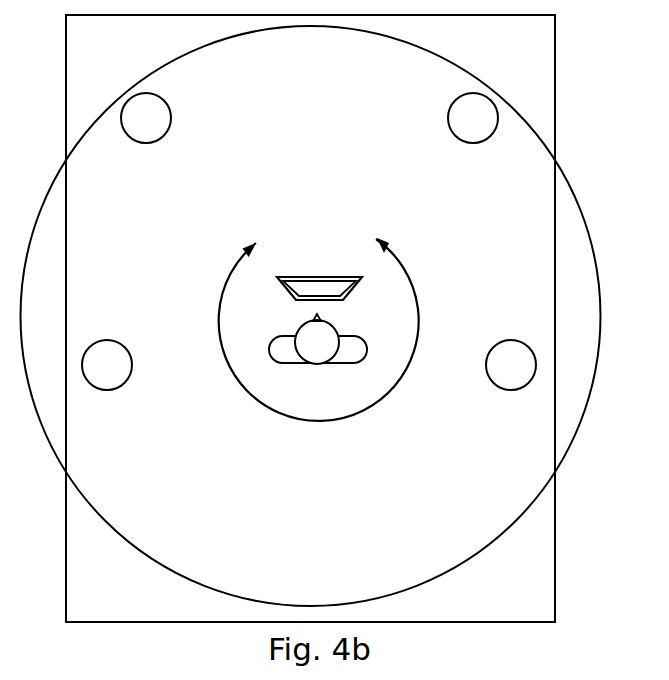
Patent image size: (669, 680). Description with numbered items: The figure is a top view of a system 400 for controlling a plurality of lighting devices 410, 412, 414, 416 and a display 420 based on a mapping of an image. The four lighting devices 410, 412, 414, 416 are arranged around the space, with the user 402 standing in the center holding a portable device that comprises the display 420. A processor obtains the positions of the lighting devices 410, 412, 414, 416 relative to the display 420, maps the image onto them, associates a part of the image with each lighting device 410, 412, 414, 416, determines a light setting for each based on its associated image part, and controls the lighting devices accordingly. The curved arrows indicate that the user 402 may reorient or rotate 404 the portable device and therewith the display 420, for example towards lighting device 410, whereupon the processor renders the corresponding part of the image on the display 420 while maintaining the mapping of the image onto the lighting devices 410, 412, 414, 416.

The system 400 is at (323, 578).
The user 402 is at (278, 358).
The reorientation 404 is at (362, 412).
The lighting device 410 is at (118, 372).
The lighting device 412 is at (148, 132).
The lighting device 414 is at (478, 122).
The lighting device 416 is at (503, 367).
The display 420 is at (313, 287).